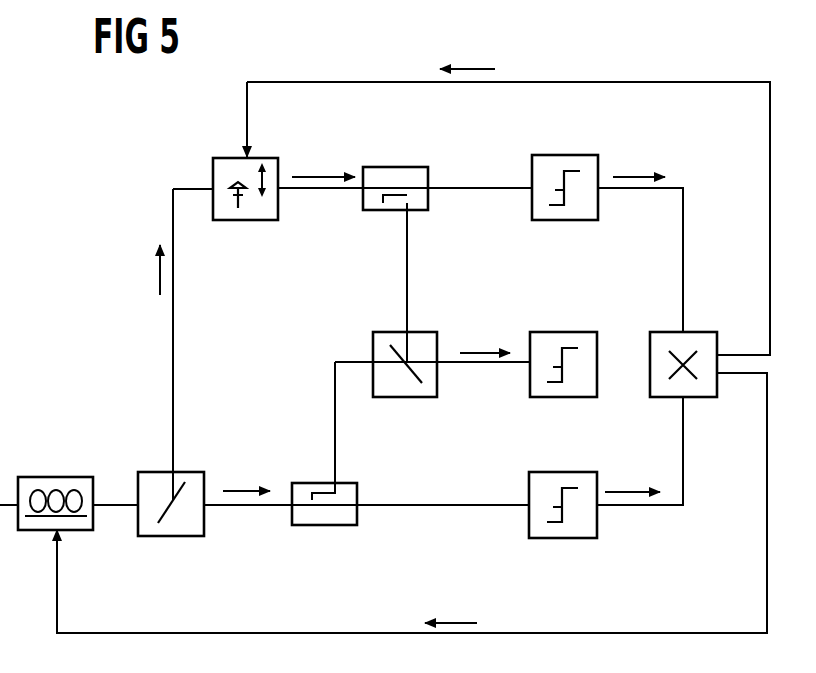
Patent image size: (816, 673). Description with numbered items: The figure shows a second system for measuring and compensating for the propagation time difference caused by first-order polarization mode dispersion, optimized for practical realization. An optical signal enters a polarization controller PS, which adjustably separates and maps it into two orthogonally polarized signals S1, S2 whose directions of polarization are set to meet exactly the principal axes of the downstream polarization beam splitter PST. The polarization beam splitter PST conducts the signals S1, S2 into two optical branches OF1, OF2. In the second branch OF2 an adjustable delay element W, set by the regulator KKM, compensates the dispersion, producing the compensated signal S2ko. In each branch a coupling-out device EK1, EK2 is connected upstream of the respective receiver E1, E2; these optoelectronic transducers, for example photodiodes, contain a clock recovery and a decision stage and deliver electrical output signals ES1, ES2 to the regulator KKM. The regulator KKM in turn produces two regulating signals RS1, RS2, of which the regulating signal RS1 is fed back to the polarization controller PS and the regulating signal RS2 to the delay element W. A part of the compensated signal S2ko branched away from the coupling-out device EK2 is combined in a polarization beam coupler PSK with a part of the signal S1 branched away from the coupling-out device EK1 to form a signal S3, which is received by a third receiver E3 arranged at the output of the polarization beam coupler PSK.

The converter/modulator unit W is at (254, 222).
The coupling-out device EK2 is at (397, 165).
The optoelectronic transducer E2 is at (565, 155).
The third receiver E3 is at (560, 330).
The optoelectronic transducer E1 is at (562, 472).
The polarization beam coupler PSK is at (420, 331).
The regulator KKM is at (695, 331).
The polarization controller PS is at (55, 476).
The polarization beam splitter PST is at (172, 538).
The coupling-out device EK1 is at (322, 527).
The regulating signal RS2 is at (467, 50).
The PMD1-compensated signal S2ko is at (323, 160).
The electrical output signal ES2 is at (639, 159).
The orthogonally polarized signal S2 is at (141, 272).
The optical branch OF2 is at (173, 370).
The combined signal S3 is at (485, 334).
The electrical output signal ES1 is at (632, 474).
The orthogonally polarized signal S1 is at (246, 473).
The optical branch OF1 is at (252, 508).
The regulating signal RS1 is at (451, 605).